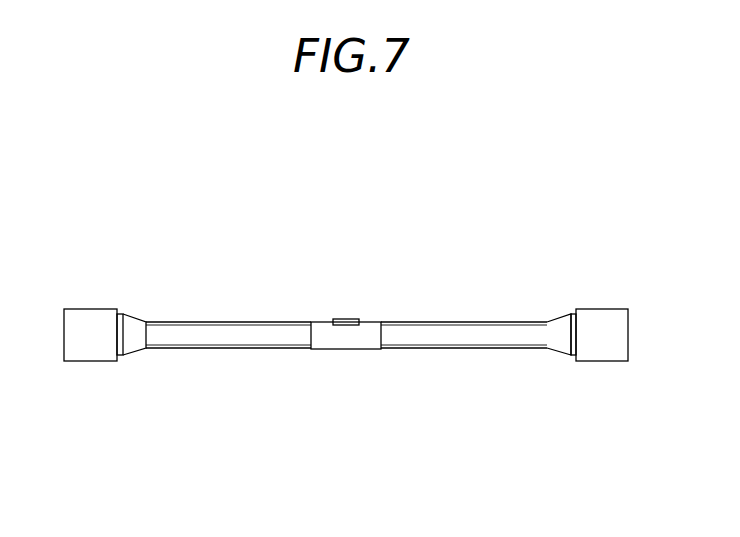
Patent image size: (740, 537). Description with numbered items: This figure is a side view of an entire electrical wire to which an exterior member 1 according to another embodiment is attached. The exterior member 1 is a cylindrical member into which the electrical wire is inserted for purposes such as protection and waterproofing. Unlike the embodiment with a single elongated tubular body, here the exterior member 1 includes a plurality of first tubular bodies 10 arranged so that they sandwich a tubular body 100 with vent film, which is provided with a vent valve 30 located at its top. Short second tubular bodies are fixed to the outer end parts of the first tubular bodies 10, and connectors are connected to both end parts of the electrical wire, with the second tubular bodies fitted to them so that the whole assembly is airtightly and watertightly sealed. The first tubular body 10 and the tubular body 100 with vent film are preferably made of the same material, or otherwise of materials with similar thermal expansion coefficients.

The exterior member 1 is at (128, 445).
The first tubular body 10 is at (441, 352).
The vent valve 30 is at (344, 316).
The tubular body with vent film 100 is at (347, 350).